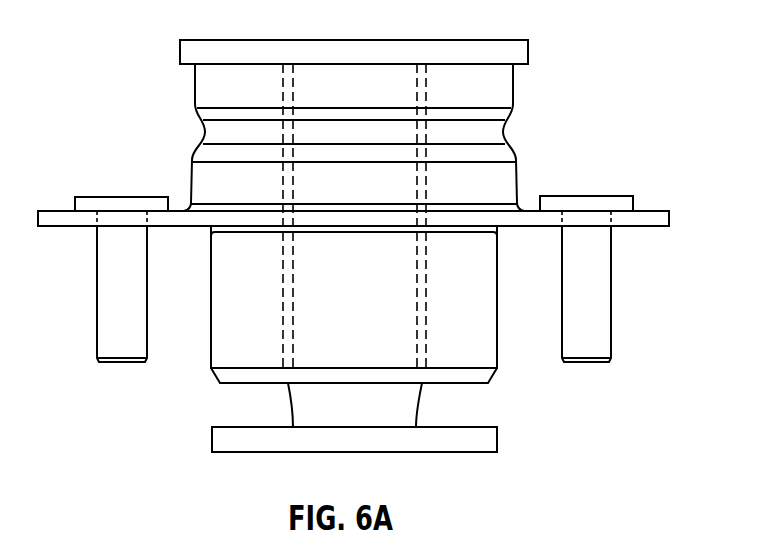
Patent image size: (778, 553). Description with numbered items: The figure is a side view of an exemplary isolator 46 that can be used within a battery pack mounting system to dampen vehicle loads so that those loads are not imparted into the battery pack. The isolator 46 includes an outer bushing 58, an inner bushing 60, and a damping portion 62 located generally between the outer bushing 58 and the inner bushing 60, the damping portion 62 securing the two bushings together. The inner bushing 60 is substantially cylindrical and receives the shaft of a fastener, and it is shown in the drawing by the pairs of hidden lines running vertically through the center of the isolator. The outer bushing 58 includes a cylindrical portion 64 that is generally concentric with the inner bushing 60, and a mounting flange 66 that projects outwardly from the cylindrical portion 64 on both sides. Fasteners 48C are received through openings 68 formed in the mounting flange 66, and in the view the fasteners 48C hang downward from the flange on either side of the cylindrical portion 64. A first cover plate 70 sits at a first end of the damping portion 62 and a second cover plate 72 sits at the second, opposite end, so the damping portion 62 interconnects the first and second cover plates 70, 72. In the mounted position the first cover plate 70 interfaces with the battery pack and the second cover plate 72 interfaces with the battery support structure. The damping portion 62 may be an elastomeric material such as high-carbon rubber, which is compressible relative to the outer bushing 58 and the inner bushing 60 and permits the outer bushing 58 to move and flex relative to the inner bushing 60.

The isolator 46 is at (537, 60).
The first cover plate 70 is at (230, 47).
The damping portion 62 is at (518, 179).
The cylindrical portion 64 is at (482, 257).
The outer bushing 58 is at (477, 307).
The inner bushing 60 is at (420, 309).
The second cover plate 72 is at (231, 438).
The mounting flange 66 is at (660, 219).
The openings 68 is at (95, 224).
The fasteners 48C is at (110, 295).